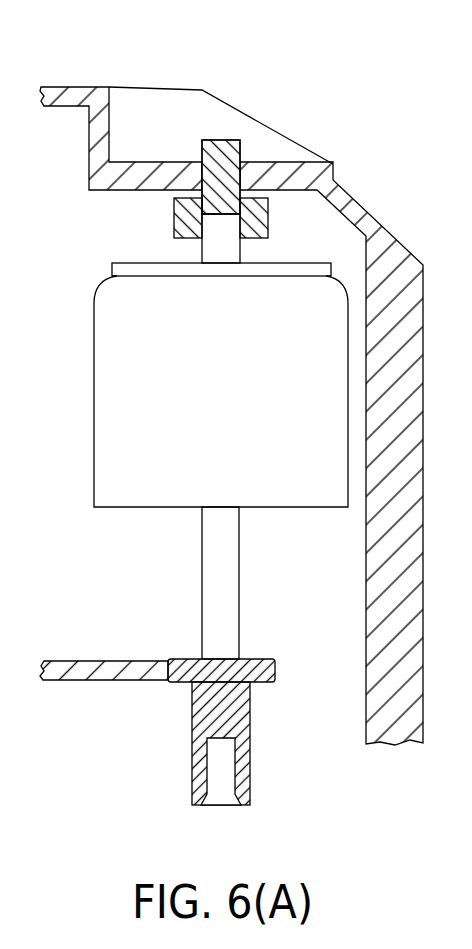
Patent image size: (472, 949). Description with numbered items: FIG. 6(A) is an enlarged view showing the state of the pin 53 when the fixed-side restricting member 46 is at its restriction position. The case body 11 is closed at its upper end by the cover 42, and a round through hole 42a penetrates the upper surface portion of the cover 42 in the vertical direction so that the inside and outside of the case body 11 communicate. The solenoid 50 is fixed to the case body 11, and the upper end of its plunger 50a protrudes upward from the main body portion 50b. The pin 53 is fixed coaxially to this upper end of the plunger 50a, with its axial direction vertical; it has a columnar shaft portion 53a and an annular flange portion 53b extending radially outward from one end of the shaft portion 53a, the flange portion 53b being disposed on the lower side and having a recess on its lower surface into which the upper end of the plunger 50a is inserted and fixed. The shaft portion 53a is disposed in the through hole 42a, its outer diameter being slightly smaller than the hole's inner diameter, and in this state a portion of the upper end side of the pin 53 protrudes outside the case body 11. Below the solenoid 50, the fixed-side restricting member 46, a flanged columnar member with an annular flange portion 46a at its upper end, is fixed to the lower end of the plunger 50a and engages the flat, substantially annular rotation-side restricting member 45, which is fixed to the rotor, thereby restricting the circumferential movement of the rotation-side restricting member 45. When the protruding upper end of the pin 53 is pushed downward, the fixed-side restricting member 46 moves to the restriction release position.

The case body 11 is at (231, 386).
The cover 42 is at (84, 86).
The through hole 42a is at (230, 168).
The pin 53 is at (183, 148).
The shaft portion 53a is at (213, 138).
The flange portion 53b is at (174, 215).
The solenoid 50 is at (221, 461).
The main body portion 50b is at (142, 508).
The plunger 50a is at (240, 592).
The rotation-side restricting member 45 is at (72, 682).
The fixed-side restricting member 46 is at (255, 728).
The flange portion 46a is at (275, 668).